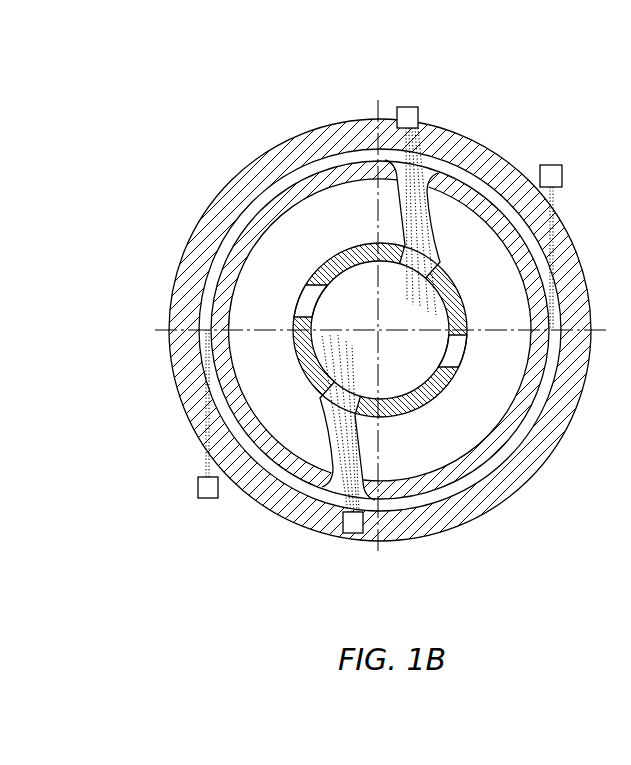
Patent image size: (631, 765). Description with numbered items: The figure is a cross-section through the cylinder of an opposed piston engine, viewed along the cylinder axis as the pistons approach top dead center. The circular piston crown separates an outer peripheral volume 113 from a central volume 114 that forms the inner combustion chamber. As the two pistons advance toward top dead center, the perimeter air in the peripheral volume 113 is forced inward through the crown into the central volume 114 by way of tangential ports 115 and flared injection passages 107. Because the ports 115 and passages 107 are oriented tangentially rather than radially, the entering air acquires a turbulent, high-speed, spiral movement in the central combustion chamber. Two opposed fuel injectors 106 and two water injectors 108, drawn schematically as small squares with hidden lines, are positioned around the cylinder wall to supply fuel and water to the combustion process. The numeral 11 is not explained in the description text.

The port 11 is at (455, 350).
The fuel injector 106 is at (408, 107).
The flared injection passage 107 is at (441, 175).
The water injector 108 is at (552, 165).
The peripheral volume 113 is at (475, 405).
The central volume 114 is at (437, 240).
The tangential port 115 is at (307, 302).